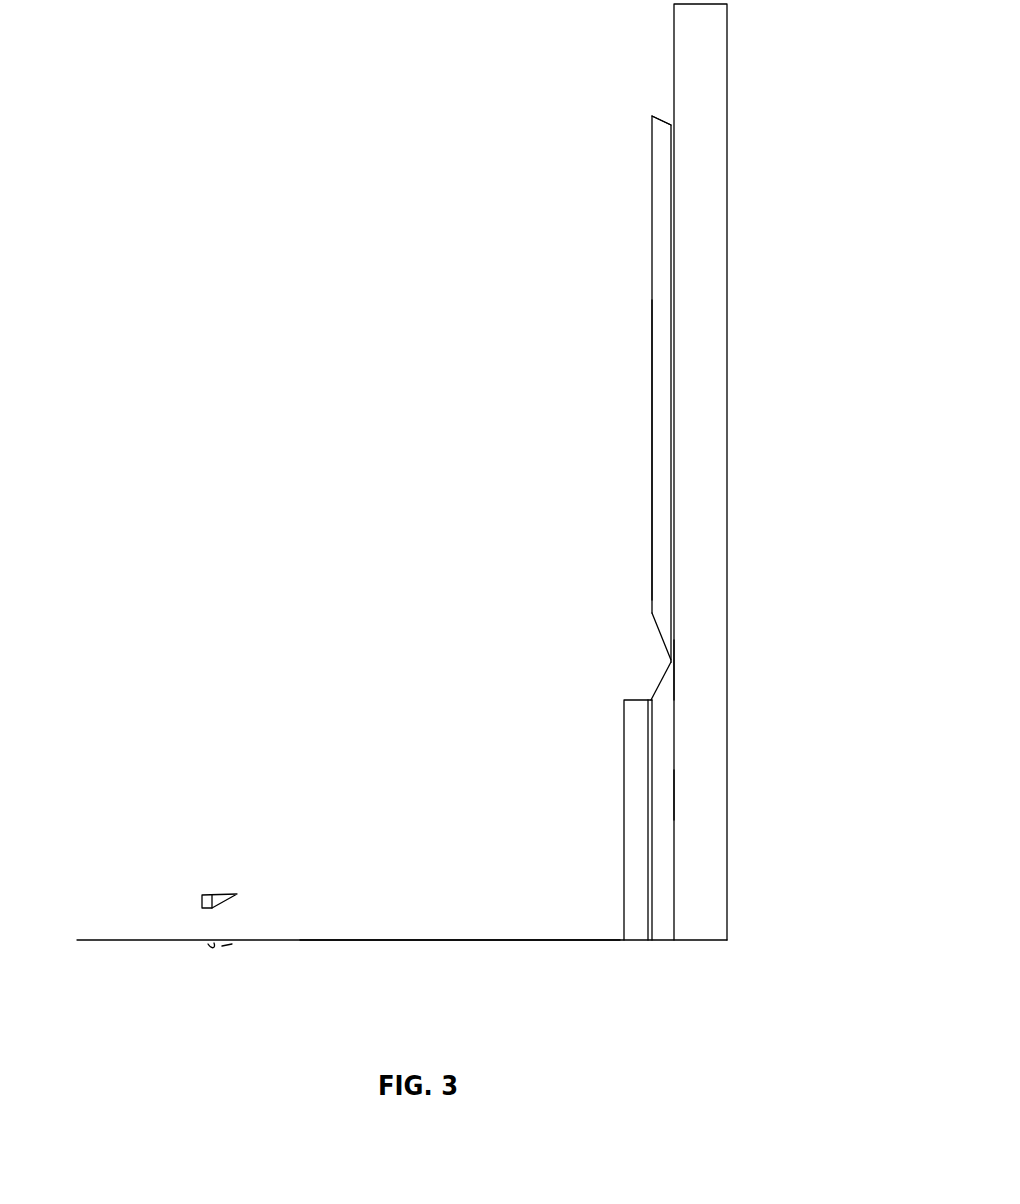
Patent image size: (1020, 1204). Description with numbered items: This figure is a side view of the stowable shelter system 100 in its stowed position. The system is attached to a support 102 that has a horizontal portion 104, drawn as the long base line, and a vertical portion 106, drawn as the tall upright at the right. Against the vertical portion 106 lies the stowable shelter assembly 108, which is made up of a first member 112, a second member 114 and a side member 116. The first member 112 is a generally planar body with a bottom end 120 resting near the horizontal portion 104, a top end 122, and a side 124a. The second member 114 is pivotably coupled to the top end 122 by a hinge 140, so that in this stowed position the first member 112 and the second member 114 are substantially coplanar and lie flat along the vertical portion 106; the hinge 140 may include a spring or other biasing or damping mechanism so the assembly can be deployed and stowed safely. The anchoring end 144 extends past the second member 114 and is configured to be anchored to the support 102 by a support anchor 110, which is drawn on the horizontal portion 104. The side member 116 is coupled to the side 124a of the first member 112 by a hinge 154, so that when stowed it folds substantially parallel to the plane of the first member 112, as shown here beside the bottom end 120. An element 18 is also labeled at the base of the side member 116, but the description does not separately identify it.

The stowable shelter system 100 is at (195, 135).
The support 102 is at (109, 939).
The horizontal portion 104 is at (462, 942).
The vertical portion 106 is at (728, 358).
The stowable shelter assembly 108 is at (649, 438).
The support anchor 110 is at (210, 950).
The first member 112 is at (676, 795).
The second member 114 is at (650, 500).
The side member 116 is at (624, 860).
The bottom end 120 is at (652, 942).
The top end 122 is at (676, 672).
The side 124a is at (652, 868).
The hinge 140 is at (670, 661).
The anchoring end 144 is at (651, 114).
The hinge 154 is at (651, 912).
The mounting member 18 is at (636, 942).